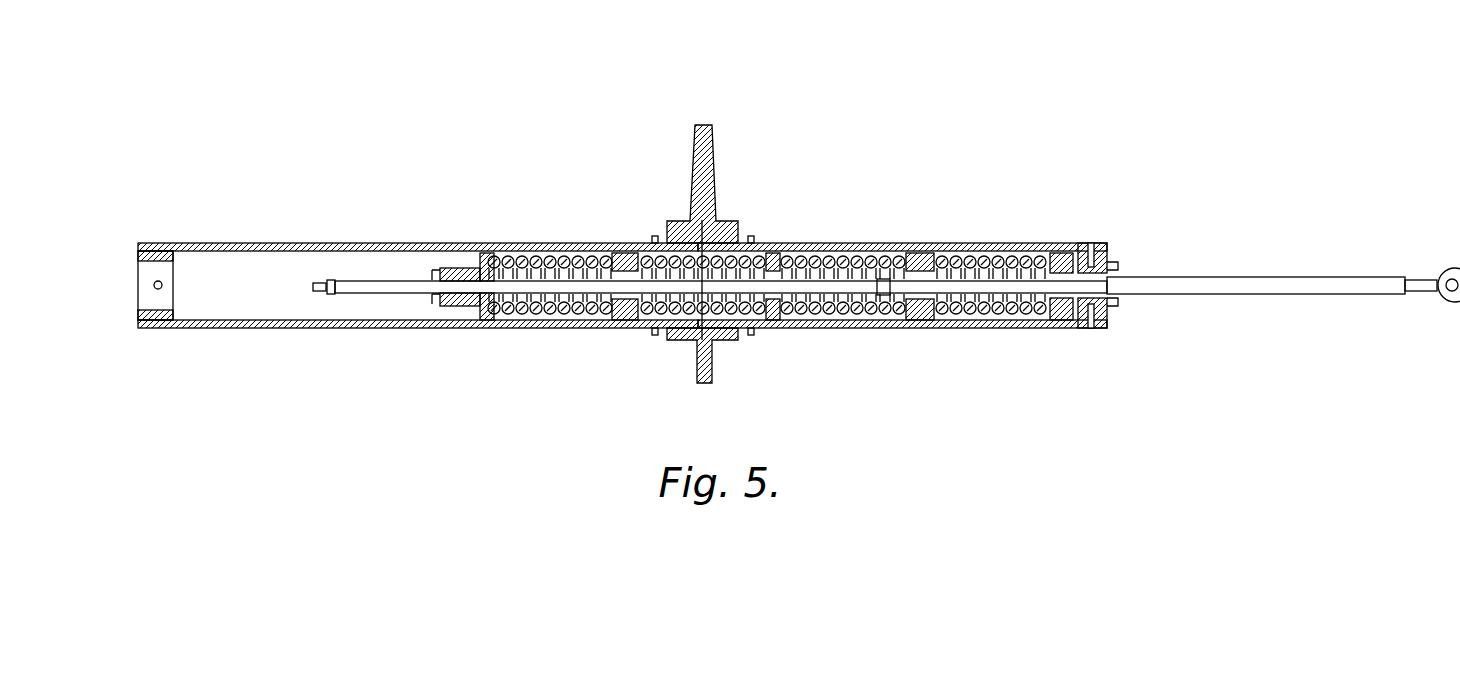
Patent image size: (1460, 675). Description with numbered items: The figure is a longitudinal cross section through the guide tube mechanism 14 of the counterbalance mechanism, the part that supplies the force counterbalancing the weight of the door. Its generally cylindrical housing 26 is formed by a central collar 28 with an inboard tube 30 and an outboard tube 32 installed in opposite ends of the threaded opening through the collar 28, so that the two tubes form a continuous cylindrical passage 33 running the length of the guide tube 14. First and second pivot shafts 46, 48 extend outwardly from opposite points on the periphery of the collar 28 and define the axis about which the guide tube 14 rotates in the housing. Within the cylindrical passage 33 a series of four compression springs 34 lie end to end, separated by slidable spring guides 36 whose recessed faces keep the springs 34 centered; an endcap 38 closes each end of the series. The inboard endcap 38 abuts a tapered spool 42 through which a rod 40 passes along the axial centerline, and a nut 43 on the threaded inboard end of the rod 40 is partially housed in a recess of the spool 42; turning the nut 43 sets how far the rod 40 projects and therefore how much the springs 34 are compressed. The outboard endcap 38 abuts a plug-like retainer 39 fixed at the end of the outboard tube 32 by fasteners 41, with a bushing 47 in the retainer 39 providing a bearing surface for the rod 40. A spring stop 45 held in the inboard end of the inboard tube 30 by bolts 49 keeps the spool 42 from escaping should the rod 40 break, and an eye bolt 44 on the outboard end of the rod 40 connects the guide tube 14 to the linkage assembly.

The guide tube mechanism 14 is at (1198, 84).
The cylindrical housing 26 is at (297, 392).
The collar 28 is at (683, 262).
The inboard tube 30 is at (294, 242).
The outboard tube 32 is at (840, 329).
The cylindrical passage 33 is at (298, 306).
The compression springs 34 is at (600, 253).
The spring guides 36 is at (625, 321).
The endcap 38 is at (489, 252).
The retainer 39 is at (1122, 262).
The rod 40 is at (1156, 296).
The fasteners 41 is at (1110, 244).
The spool 42 is at (464, 256).
The nut 43 is at (312, 287).
The eye bolt 44 is at (1440, 268).
The spring stop 45 is at (156, 321).
The first pivot shaft 46 is at (712, 134).
The bushing 47 is at (1112, 272).
The second pivot shaft 48 is at (712, 381).
The bolts 49 is at (160, 281).